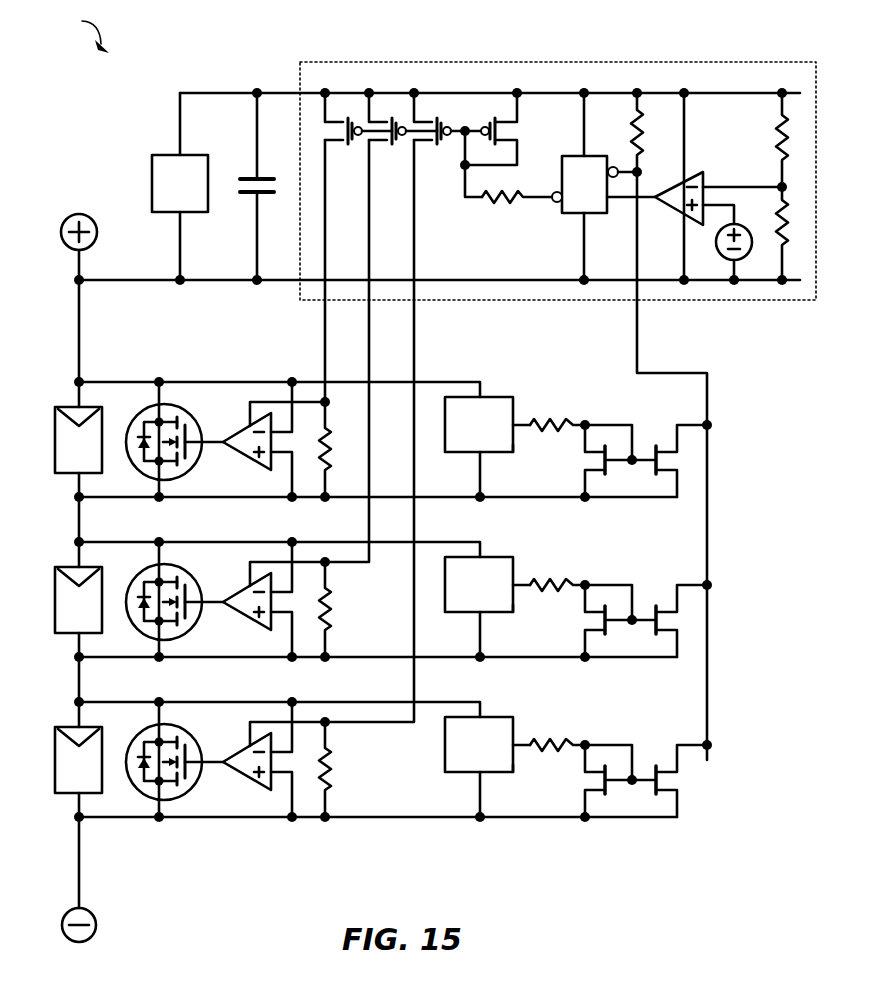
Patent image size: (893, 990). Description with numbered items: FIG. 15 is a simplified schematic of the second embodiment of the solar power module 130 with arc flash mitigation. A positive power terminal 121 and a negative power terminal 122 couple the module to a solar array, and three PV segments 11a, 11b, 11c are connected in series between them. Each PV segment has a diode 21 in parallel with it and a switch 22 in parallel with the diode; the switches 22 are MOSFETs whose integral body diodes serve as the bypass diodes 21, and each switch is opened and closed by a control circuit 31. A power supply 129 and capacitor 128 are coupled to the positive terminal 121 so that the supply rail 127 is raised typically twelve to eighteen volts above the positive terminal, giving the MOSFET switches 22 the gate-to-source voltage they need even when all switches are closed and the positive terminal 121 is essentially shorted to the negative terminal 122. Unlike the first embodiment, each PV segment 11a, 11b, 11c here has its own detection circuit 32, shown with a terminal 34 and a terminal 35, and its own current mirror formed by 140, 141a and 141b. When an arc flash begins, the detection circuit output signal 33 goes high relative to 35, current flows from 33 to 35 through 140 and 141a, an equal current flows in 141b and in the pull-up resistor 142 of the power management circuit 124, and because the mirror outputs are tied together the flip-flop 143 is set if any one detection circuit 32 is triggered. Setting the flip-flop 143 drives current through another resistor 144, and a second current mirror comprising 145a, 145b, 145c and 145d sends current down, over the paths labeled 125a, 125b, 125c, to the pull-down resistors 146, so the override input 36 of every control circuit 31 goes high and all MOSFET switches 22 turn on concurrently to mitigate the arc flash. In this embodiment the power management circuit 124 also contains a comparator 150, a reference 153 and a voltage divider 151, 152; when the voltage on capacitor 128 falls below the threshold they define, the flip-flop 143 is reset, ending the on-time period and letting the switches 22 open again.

The solar power module 130 is at (77, 33).
The power management circuit 124 is at (300, 67).
The supply rail 127 is at (180, 115).
The capacitor 128 is at (240, 180).
The power supply circuit 129 is at (152, 155).
The positive power terminal 121 is at (95, 224).
The negative power terminal 122 is at (95, 934).
The current mirror element 145a is at (343, 153).
The current mirror element 145b is at (388, 153).
The current mirror element 145c is at (433, 153).
The current mirror element 145d is at (500, 118).
The flip-flop 143 is at (563, 156).
The resistor 144 is at (508, 206).
The pull-up resistor 142 is at (630, 140).
The comparator 150 is at (705, 171).
The voltage divider resistor 151 is at (776, 140).
The voltage divider resistor 152 is at (776, 225).
The reference 153 is at (719, 250).
The current supply line 125a is at (343, 318).
The current supply line 125b is at (388, 318).
The current supply line 125c is at (433, 318).
The PV segment 11a is at (55, 425).
The PV segment 11b is at (55, 585).
The PV segment 11c is at (55, 745).
The bypass diode 21 is at (141, 434).
The switch 22 is at (145, 475).
The override input 36 is at (248, 424).
The control circuit 31 is at (247, 462).
The pull-down resistor 146 is at (337, 438).
The detector 34 is at (482, 396).
The output signal 33 is at (518, 422).
The detection circuit return node 35 is at (477, 455).
The detection circuit 32 is at (512, 453).
The current mirror component 140 is at (563, 422).
The current mirror device 141a is at (605, 475).
The current mirror device 141b is at (658, 445).